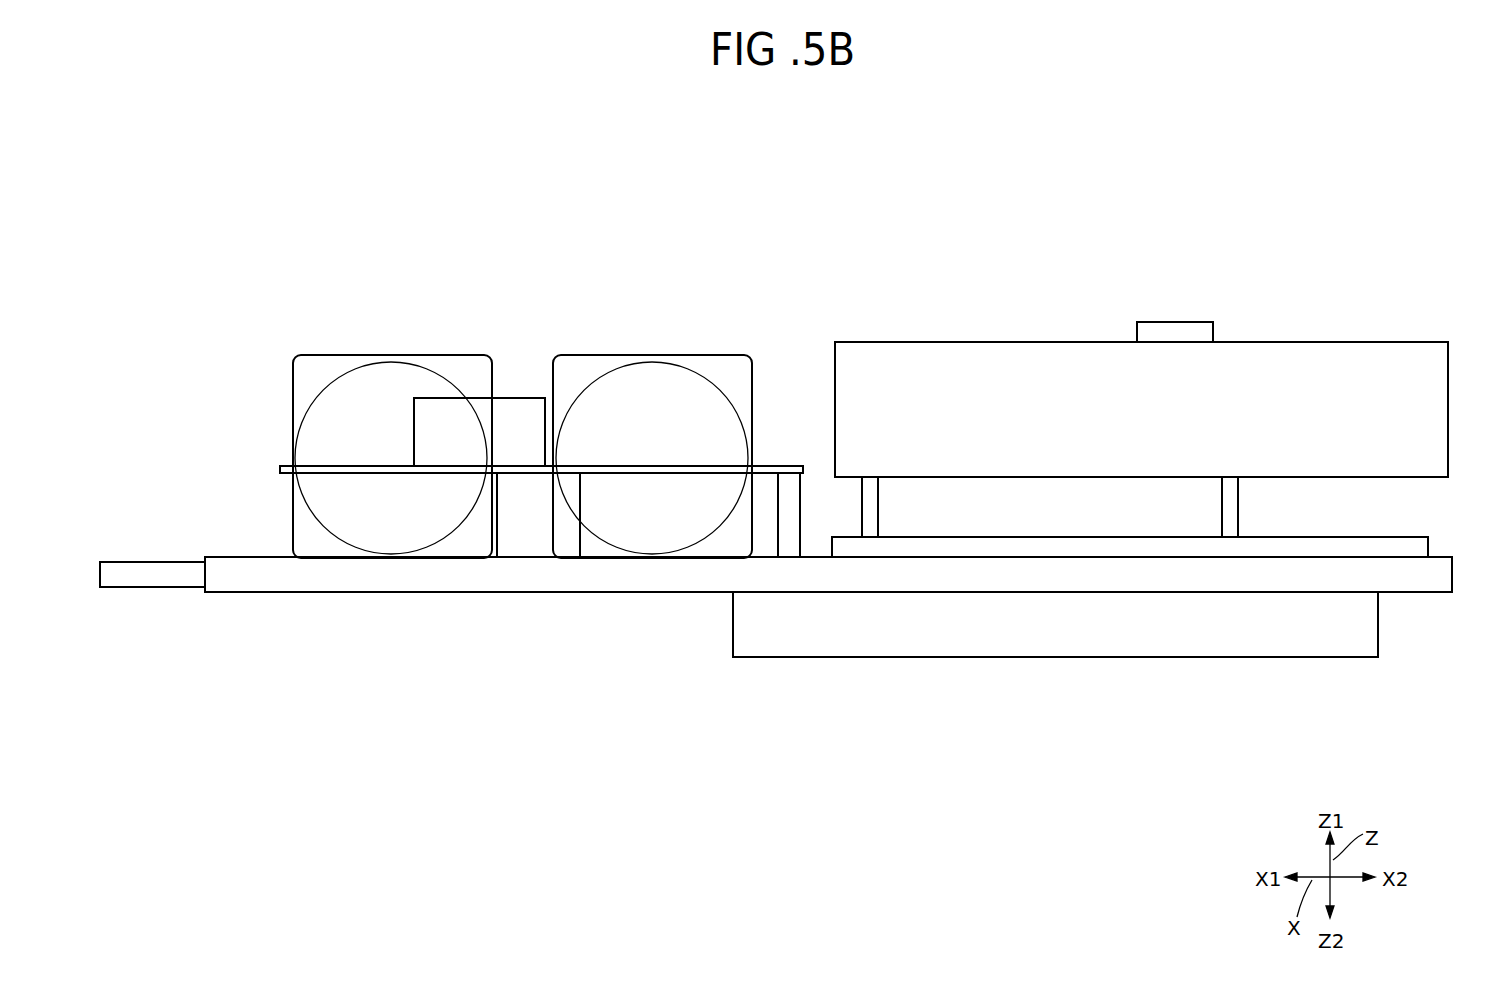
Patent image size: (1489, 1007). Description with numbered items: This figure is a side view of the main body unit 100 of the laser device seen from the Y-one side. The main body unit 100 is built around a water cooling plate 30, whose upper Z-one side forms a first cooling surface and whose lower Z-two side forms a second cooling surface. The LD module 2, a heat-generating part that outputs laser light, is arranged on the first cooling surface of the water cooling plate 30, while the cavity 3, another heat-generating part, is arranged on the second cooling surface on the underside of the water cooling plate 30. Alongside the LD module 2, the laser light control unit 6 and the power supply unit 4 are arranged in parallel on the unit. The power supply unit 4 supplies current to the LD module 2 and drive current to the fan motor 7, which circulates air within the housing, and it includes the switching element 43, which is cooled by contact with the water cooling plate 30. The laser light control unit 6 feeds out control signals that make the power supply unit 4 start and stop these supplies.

The main body unit 100 is at (1330, 270).
The water cooling plate 30 is at (845, 586).
The cavity 3 is at (1098, 610).
The LD module 2 is at (987, 545).
The laser light control unit 6 is at (1240, 341).
The power supply unit 4 is at (520, 341).
The fan motor 7 is at (437, 355).
The switching element 43 is at (475, 490).